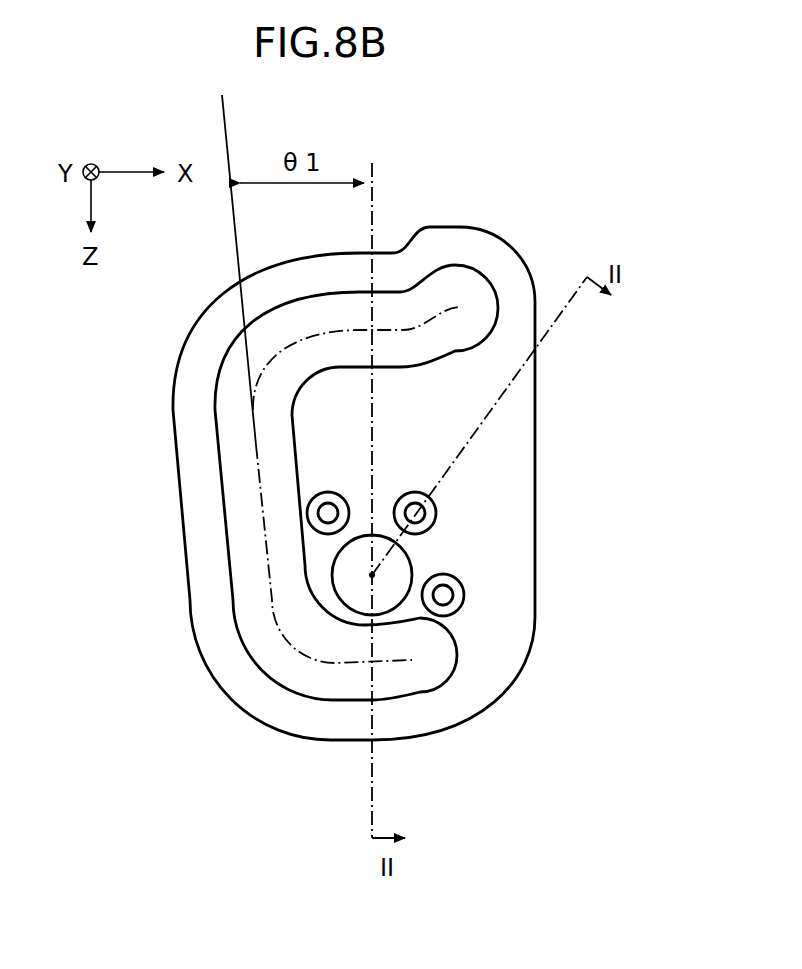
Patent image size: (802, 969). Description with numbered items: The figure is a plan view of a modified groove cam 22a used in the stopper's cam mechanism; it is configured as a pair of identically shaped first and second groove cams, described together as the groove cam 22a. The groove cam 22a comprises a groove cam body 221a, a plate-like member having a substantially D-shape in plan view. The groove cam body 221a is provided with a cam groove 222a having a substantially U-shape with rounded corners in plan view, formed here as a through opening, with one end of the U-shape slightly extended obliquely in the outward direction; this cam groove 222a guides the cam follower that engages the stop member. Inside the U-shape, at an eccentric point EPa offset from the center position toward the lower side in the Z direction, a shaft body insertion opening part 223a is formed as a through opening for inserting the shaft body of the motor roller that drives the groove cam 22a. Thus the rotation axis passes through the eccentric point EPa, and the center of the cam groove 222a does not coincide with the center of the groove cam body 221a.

The groove cam 22a is at (548, 203).
The groove cam body 221a is at (518, 433).
The cam groove 222a is at (230, 405).
The shaft body insertion opening part 223a is at (395, 568).
The eccentric point EPa is at (372, 575).